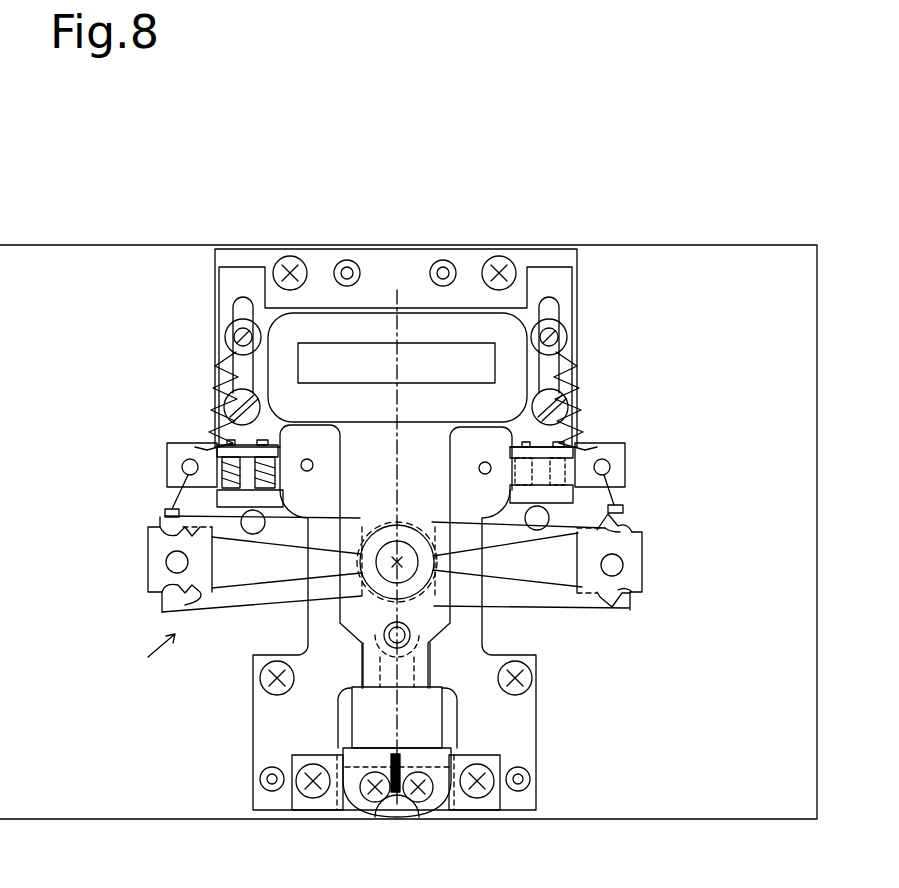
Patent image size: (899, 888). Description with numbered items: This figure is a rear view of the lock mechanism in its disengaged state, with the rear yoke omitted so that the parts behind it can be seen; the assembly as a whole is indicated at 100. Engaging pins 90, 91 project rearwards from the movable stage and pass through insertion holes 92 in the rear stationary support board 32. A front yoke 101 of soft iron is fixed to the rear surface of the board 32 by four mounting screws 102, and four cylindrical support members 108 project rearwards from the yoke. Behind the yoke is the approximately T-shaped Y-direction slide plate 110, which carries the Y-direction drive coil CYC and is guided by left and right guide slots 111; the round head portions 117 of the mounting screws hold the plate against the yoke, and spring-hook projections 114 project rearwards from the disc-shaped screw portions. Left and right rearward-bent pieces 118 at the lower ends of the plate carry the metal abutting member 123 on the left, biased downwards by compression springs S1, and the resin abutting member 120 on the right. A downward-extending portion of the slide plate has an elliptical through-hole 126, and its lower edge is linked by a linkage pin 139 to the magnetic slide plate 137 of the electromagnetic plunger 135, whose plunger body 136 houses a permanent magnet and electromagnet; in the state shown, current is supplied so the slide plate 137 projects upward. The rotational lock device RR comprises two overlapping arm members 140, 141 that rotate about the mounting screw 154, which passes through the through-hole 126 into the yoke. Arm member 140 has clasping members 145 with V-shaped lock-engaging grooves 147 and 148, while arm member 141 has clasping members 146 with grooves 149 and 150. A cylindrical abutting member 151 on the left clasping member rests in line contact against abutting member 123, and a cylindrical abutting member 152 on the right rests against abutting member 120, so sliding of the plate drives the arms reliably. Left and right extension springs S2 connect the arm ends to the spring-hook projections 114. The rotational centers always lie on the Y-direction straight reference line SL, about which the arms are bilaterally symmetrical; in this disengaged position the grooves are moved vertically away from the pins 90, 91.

The cassette unit 100 is at (176, 218).
The rear stationary support board 32 is at (630, 265).
The front yoke 101 is at (562, 250).
The mounting screws 102 is at (290, 256).
The cylindrical support members 108 is at (347, 260).
The Y-direction drive coil CYC is at (413, 318).
The Y-direction straight reference line SL is at (397, 337).
The Y-direction slide plate 110 is at (232, 280).
The guide slots 111 is at (238, 310).
The spring-hook projections 114 is at (238, 338).
The extension springs S2 is at (225, 385).
The round head portions 117 is at (228, 410).
The rearward-bent pieces 118 is at (190, 448).
The abutting member 123 is at (225, 495).
The abutting member 120 is at (565, 500).
The compression springs S1 is at (308, 459).
The through-hole 126 is at (408, 512).
The mounting screw 154 is at (397, 546).
The clasping members 145 is at (225, 537).
The clasping members 146 is at (560, 535).
The cylindrical abutting member 151 is at (258, 530).
The cylindrical abutting member 152 is at (535, 528).
The engaging pin 90 is at (166, 562).
The engaging pin 91 is at (624, 565).
The insertion holes 92 is at (150, 573).
The V-shaped lock-engaging groove 147 is at (165, 518).
The V-shaped lock-engaging groove 149 is at (165, 600).
The arm member 141 is at (625, 517).
The V-shaped lock-engaging groove 150 is at (620, 532).
The V-shaped lock-engaging groove 148 is at (638, 592).
The arm member 140 is at (612, 606).
The rotational lock device RR is at (136, 654).
The linkage pin 139 is at (385, 643).
The magnetic slide plate 137 is at (355, 692).
The electromagnetic plunger 135 is at (370, 800).
The plunger body 136 is at (397, 806).